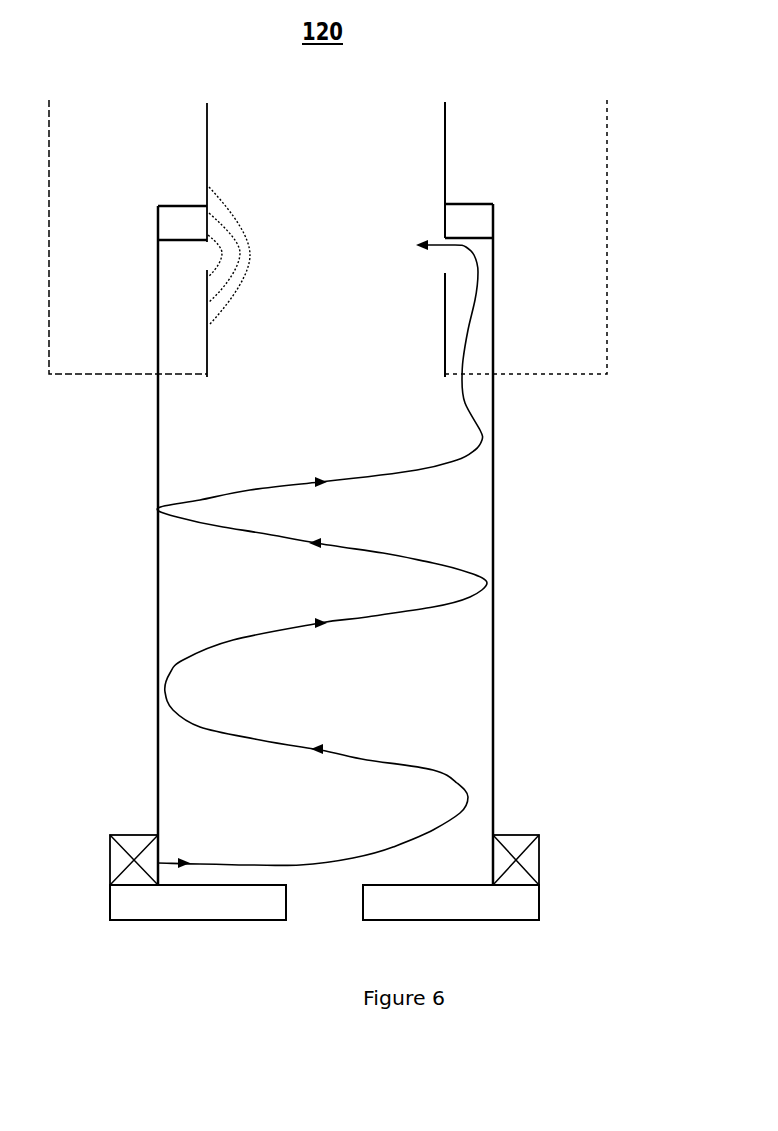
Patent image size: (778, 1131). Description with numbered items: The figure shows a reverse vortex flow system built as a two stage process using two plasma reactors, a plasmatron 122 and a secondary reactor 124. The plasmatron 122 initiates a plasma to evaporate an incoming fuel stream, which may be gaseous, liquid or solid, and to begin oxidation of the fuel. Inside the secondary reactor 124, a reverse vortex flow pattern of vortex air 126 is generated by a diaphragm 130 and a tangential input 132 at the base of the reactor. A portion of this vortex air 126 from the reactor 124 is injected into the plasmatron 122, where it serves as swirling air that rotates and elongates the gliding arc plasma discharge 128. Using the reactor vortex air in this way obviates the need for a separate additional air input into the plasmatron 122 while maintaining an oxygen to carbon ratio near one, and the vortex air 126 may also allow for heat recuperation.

The plasmatron 122 is at (583, 376).
The secondary reactor 124 is at (503, 519).
The vortex air 126 is at (476, 336).
The plasma discharge 128 is at (241, 289).
The diaphragm 130 is at (533, 917).
The tangential input 132 is at (543, 862).